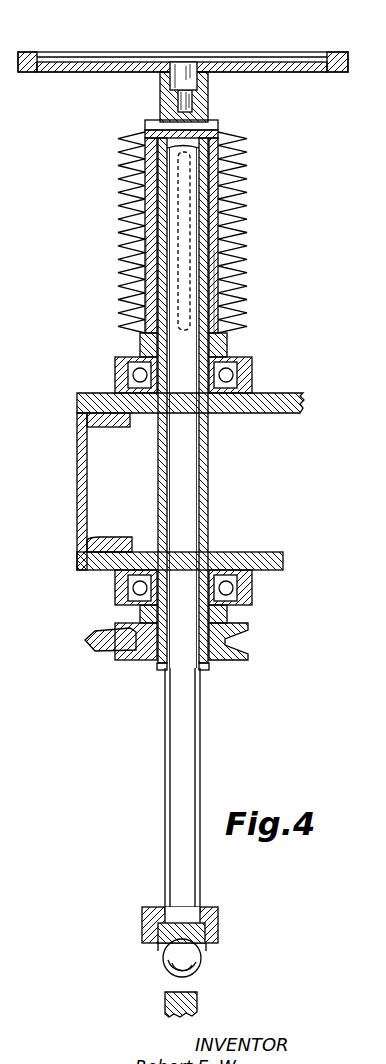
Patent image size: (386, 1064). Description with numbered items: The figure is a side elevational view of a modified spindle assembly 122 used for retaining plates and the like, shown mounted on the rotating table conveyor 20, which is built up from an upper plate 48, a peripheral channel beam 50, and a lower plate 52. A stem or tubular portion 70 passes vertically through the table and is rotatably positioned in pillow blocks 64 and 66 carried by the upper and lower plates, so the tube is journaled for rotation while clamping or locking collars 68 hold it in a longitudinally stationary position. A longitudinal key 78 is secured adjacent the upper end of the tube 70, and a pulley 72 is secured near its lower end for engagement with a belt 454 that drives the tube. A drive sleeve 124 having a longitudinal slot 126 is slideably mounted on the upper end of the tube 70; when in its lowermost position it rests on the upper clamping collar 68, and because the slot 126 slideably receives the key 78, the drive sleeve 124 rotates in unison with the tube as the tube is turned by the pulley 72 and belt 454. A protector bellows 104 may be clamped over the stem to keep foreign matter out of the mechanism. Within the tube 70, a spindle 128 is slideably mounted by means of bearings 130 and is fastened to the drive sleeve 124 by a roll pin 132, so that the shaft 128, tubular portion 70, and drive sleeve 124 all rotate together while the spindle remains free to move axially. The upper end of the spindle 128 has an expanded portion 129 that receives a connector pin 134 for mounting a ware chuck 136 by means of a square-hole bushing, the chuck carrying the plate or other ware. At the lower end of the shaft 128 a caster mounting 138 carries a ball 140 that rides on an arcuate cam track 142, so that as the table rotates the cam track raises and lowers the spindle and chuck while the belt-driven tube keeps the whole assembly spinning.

The rotating table conveyor 20 is at (300, 391).
The upper plate 48 is at (279, 413).
The peripheral channel beam 50 is at (75, 449).
The lower plate 52 is at (248, 552).
The pillow block 64 is at (251, 376).
The pillow block 66 is at (252, 594).
The clamping or locking collar 68 is at (236, 349).
The stem or tubular portion 70 is at (210, 474).
The pulley 72 is at (250, 659).
The longitudinal key 78 is at (207, 172).
The protector bellows 104 is at (240, 216).
The spindle assembly 122 is at (125, 208).
The drive sleeve 124 is at (143, 237).
The longitudinal slot 126 is at (226, 260).
The spindle 128 is at (165, 740).
The expanded portion 129 is at (208, 101).
The bearings 130 is at (158, 168).
The roll pin 132 is at (147, 120).
The connector pin 134 is at (170, 80).
The ware chuck 136 is at (296, 52).
The caster mounting 138 is at (218, 929).
The ball 140 is at (200, 972).
The arcuate cam track 142 is at (198, 996).
The belt 454 is at (86, 640).